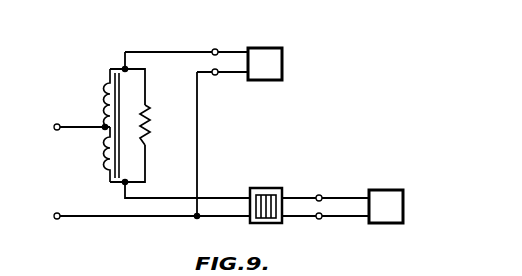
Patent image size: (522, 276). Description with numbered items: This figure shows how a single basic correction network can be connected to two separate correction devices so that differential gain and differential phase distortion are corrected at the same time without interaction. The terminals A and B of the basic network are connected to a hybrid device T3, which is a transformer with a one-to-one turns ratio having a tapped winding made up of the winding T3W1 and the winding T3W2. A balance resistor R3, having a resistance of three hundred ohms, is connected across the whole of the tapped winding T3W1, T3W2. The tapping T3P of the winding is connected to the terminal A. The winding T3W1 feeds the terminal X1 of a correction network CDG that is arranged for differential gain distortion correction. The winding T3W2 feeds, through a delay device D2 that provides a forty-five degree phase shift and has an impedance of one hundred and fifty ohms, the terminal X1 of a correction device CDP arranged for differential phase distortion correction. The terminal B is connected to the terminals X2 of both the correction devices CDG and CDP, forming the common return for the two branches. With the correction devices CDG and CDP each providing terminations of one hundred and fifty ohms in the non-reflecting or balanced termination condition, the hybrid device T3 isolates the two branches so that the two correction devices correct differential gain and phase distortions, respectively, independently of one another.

The hybrid device T3 is at (110, 69).
The winding T3W1 is at (100, 84).
The winding T3W2 is at (98, 139).
The tapping T3P is at (104, 126).
The terminal A is at (76, 126).
The terminal B is at (47, 218).
The balance resistor R3 is at (151, 130).
The terminal X1 is at (212, 50).
The terminal X2 is at (215, 76).
The correction network for differential gain distortion correction CDG is at (282, 70).
The correction device for differential phase distortion correction CDP is at (403, 210).
The delay device D2 is at (265, 187).